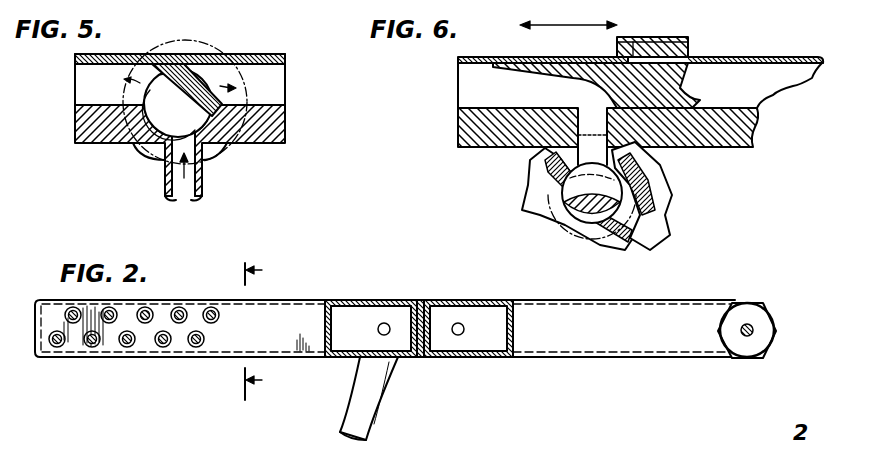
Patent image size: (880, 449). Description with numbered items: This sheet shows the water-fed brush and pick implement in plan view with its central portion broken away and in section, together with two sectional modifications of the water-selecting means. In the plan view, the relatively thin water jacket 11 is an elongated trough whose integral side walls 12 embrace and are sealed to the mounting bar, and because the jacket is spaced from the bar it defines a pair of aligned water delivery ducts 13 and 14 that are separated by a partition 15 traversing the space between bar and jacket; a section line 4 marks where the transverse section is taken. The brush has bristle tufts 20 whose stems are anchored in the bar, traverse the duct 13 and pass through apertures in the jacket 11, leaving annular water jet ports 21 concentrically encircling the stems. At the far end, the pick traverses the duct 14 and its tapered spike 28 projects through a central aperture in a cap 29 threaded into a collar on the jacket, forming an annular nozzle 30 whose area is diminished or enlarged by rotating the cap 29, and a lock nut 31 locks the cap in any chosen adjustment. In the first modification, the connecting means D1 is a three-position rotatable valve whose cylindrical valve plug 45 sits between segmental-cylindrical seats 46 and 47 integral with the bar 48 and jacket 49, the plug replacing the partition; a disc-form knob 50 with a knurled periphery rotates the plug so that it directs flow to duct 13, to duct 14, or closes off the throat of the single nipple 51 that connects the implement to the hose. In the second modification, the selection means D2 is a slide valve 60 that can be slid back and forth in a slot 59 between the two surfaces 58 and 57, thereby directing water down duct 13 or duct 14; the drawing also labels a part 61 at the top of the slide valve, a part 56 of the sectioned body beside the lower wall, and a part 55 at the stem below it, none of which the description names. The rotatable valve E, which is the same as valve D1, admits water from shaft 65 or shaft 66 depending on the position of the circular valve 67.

In FIG. 2, the section line 4- 4 is at (260, 331).
In FIG. 2, the water jacket 11 is at (297, 305).
In FIG. 2, the side walls 12 is at (356, 301).
In FIG. 5, the water delivery duct 13 is at (80, 90).
In FIG. 6, the water delivery duct 13 is at (463, 90).
In FIG. 2, the water delivery duct 13 is at (349, 342).
In FIG. 5, the water delivery duct 14 is at (283, 93).
In FIG. 6, the water delivery duct 14 is at (765, 92).
In FIG. 2, the water delivery duct 14 is at (482, 342).
In FIG. 2, the partition 15 is at (421, 301).
In FIG. 2, the bristle tufts 20 is at (126, 348).
In FIG. 2, the annular water jet ports 21 is at (195, 348).
In FIG. 2, the tapered spike 28 is at (750, 322).
In FIG. 2, the cap 29 is at (766, 322).
In FIG. 2, the annular nozzle 30 is at (745, 332).
In FIG. 2, the lock nut 31 is at (778, 333).
In FIG. 5, the valve plug 45 is at (232, 80).
In FIG. 5, the seat 46 is at (206, 113).
In FIG. 5, the seat 47 is at (216, 62).
In FIG. 5, the bar 48 is at (285, 130).
In FIG. 5, the jacket 49 is at (283, 58).
In FIG. 5, the knob 50 is at (168, 56).
In FIG. 5, the nipple 51 is at (163, 188).
In FIG. 6, the stem 55 is at (540, 171).
In FIG. 6, the body block 56 is at (652, 146).
In FIG. 6, the surface 57 is at (460, 126).
In FIG. 6, the surface 58 is at (452, 60).
In FIG. 6, the slot 59 is at (586, 51).
In FIG. 6, the slide valve 60 is at (664, 52).
In FIG. 6, the nut flange 61 is at (628, 37).
In FIG. 6, the shaft 65 is at (525, 208).
In FIG. 6, the shaft 66 is at (668, 216).
In FIG. 6, the circular valve 67 is at (600, 240).
In FIG. 5, the connecting means D1 is at (132, 170).
In FIG. 6, the selection means D2 is at (704, 44).
In FIG. 6, the rotatable valve E is at (503, 203).